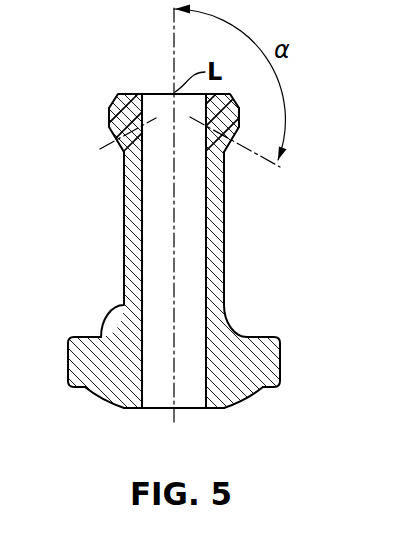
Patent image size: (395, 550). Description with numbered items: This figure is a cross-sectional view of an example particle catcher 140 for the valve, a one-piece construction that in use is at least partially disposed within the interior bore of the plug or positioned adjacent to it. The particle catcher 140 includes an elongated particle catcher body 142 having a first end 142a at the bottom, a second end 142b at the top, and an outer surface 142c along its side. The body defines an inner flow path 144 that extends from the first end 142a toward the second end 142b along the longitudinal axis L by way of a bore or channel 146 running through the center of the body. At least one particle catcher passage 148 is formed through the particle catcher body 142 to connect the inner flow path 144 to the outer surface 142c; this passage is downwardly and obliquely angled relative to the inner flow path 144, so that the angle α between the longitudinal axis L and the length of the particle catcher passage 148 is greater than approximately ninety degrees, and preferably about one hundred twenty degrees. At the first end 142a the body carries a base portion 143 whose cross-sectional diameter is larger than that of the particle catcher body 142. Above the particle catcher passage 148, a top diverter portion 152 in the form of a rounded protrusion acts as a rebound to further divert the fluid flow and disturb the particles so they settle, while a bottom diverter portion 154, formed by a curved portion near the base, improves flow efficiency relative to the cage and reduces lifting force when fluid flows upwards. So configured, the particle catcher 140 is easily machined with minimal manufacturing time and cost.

The particle catcher 140 is at (102, 363).
The particle catcher body 142 is at (133, 286).
The first end 142a is at (240, 397).
The second end 142b is at (237, 101).
The outer surface 142c is at (226, 242).
The base portion 143 is at (258, 360).
The inner flow path 144 is at (155, 348).
The bore or channel 146 is at (206, 270).
The particle catcher passage 148 is at (193, 116).
The top diverter portion 152 is at (133, 124).
The bottom diverter portion 154 is at (107, 396).